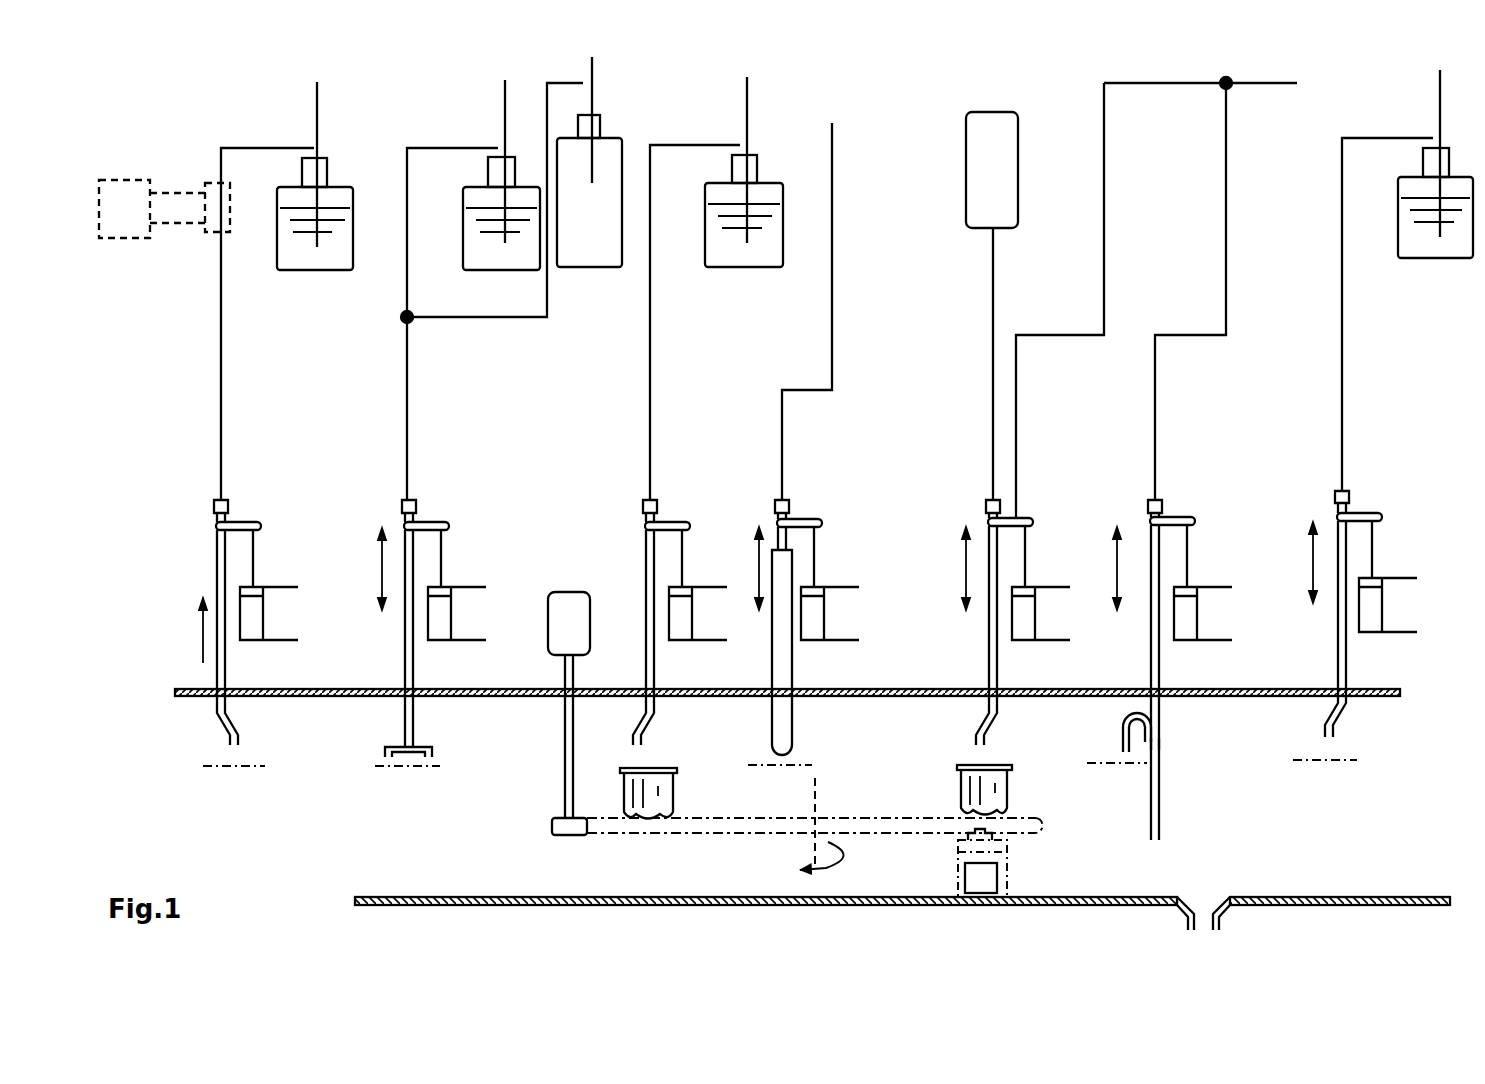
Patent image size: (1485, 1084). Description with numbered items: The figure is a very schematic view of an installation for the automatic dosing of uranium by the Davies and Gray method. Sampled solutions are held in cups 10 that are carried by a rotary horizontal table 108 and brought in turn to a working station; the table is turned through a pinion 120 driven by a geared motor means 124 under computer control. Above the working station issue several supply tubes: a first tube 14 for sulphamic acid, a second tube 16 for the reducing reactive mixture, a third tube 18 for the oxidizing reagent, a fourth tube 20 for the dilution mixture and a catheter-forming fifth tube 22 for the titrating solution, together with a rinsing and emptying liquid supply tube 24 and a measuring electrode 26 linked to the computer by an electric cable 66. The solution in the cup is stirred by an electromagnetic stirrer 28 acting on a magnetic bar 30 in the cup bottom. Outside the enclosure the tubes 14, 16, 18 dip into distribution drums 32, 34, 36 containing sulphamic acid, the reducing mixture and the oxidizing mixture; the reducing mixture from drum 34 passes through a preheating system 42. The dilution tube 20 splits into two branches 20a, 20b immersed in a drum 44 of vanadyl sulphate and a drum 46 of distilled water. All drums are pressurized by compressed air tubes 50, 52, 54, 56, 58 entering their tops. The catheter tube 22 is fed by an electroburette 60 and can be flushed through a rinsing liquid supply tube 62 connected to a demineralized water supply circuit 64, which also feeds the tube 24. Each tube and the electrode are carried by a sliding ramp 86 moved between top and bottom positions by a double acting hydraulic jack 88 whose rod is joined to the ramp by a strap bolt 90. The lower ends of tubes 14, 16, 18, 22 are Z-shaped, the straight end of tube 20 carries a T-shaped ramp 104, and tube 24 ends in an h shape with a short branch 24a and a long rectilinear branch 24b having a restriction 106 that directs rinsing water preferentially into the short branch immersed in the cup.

The cup 10 is at (684, 783).
The first tube 14 is at (1340, 469).
The second tube 16 is at (220, 408).
The third tube 18 is at (648, 380).
The fourth tube 20 is at (407, 384).
The branch 20a is at (405, 286).
The branch 20b is at (548, 308).
The fifth tube 22 is at (992, 456).
The rinsing and emptying liquid supply tube 24 is at (1153, 456).
The short branch 24a is at (1125, 717).
The long rectilinear branch 24b is at (1160, 823).
The measuring electrode 26 is at (780, 633).
The electromagnetic stirrer 28 is at (995, 881).
The magnetic bar 30 is at (1005, 798).
The distribution drum 32 is at (1460, 262).
The distribution drum 34 is at (340, 270).
The distribution drum 36 is at (755, 268).
The preheating system 42 is at (120, 180).
The drum 44 is at (500, 270).
The drum 46 is at (578, 268).
The compressed air tube 50 is at (1437, 113).
The compressed air tube 52 is at (316, 124).
The compressed air tube 54 is at (750, 116).
The compressed air tube 56 is at (503, 122).
The compressed air tube 58 is at (594, 104).
The electroburette 60 is at (966, 211).
The rinsing liquid supply tube 62 is at (1104, 234).
The demineralized water supply circuit 64 is at (1253, 86).
The electric cable 66 is at (832, 396).
The sliding ramp 86 is at (217, 573).
The double acting hydraulic jack 88 is at (283, 583).
The strap bolt 90 is at (243, 521).
The T-shaped ramp 104 is at (385, 757).
The restriction 106 is at (1161, 746).
The rotary horizontal table 108 is at (762, 832).
The pinion 120 is at (552, 829).
The geared motor means 124 is at (568, 592).